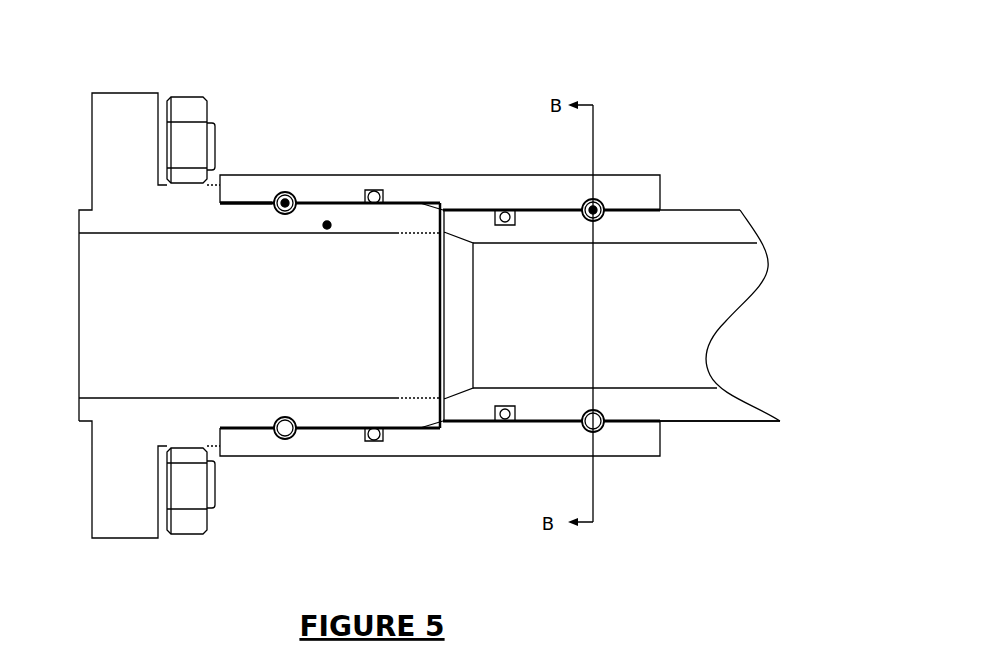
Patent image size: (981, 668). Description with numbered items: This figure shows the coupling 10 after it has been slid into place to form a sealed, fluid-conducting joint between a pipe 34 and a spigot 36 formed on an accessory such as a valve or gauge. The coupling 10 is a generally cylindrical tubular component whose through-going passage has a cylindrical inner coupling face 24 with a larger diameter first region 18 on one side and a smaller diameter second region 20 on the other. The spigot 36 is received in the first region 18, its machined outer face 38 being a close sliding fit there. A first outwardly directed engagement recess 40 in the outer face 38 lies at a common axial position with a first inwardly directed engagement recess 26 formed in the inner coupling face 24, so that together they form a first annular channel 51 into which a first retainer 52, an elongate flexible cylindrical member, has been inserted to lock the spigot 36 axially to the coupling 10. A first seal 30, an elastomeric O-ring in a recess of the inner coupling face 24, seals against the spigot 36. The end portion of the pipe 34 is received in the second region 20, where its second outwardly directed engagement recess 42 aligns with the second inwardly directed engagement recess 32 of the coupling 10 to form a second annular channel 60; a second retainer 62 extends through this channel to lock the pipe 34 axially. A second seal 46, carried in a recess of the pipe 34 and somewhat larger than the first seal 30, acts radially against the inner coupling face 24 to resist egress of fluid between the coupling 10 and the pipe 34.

The coupling 10 is at (287, 458).
The first region of the passage 18 is at (261, 315).
The second region of the passage 20 is at (500, 315).
The inner coupling face 24 is at (635, 421).
The first inwardly directed engagement recess 26 is at (283, 195).
The first seal 30 is at (389, 176).
The second inwardly directed engagement recess 32 is at (600, 200).
The pipe 34 is at (713, 209).
The spigot 36 is at (327, 221).
The outer face of the spigot 38 is at (336, 434).
The first outwardly directed engagement recess 40 is at (285, 216).
The second outwardly directed engagement recess 42 is at (602, 218).
The second seal 46 is at (500, 418).
The first annular channel 51 is at (268, 211).
The first retainer 52 is at (292, 194).
The second annular channel 60 is at (612, 218).
The second retainer 62 is at (582, 210).